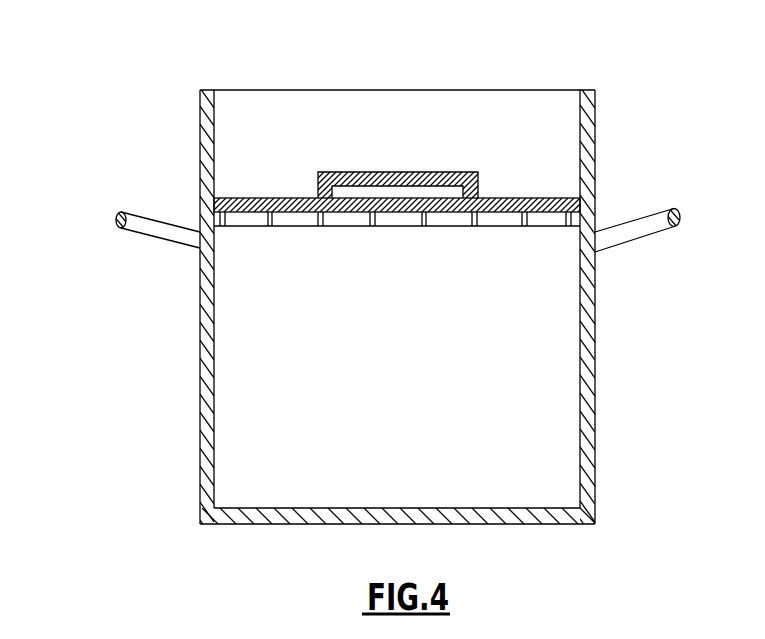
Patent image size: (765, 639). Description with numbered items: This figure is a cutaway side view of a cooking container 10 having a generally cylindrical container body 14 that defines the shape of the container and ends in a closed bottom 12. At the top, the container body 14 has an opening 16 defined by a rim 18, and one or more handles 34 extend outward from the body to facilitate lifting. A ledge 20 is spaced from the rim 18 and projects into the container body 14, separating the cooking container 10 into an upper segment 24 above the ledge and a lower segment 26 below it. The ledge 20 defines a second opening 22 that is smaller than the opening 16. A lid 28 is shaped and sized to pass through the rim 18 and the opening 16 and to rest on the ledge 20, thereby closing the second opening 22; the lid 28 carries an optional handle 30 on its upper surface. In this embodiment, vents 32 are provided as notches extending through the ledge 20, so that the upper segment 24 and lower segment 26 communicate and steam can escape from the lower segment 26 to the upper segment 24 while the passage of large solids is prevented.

The cooking container 10 is at (184, 122).
The closed bottom 12 is at (417, 508).
The container body 14 is at (596, 320).
The opening 16 is at (518, 82).
The rim 18 is at (596, 90).
The ledge 20 is at (222, 228).
The second opening 22 is at (560, 232).
The upper segment 24 is at (401, 100).
The lower segment 26 is at (563, 404).
The lid 28 is at (508, 198).
The handle 30 is at (420, 172).
The vents 32 is at (372, 213).
The handles 34 is at (117, 212).